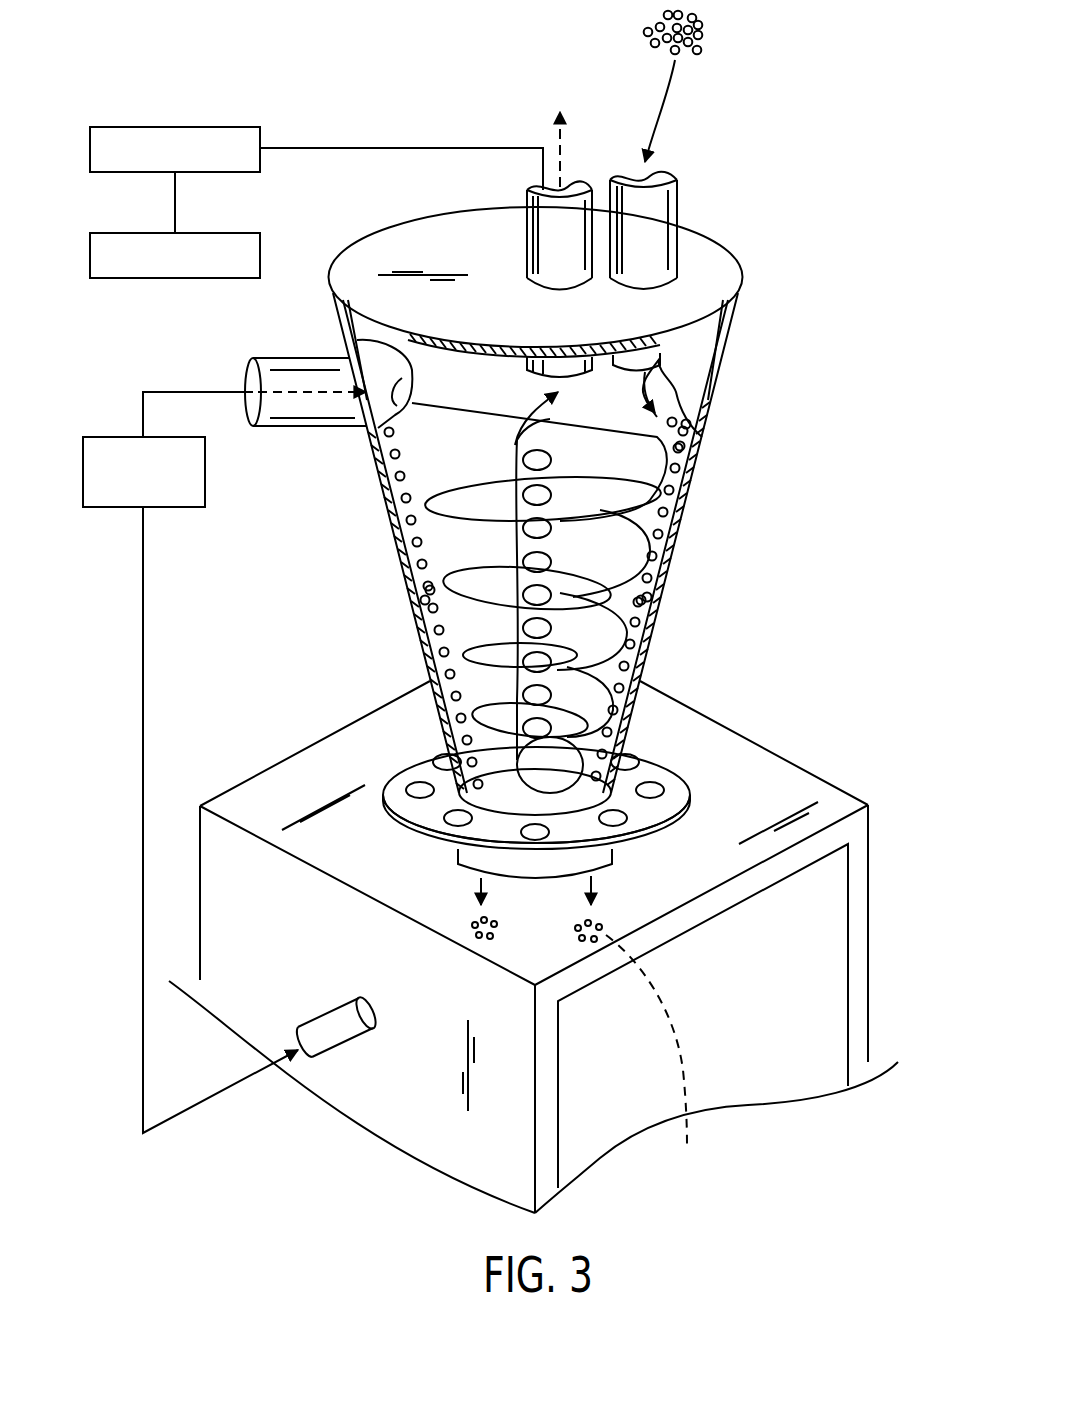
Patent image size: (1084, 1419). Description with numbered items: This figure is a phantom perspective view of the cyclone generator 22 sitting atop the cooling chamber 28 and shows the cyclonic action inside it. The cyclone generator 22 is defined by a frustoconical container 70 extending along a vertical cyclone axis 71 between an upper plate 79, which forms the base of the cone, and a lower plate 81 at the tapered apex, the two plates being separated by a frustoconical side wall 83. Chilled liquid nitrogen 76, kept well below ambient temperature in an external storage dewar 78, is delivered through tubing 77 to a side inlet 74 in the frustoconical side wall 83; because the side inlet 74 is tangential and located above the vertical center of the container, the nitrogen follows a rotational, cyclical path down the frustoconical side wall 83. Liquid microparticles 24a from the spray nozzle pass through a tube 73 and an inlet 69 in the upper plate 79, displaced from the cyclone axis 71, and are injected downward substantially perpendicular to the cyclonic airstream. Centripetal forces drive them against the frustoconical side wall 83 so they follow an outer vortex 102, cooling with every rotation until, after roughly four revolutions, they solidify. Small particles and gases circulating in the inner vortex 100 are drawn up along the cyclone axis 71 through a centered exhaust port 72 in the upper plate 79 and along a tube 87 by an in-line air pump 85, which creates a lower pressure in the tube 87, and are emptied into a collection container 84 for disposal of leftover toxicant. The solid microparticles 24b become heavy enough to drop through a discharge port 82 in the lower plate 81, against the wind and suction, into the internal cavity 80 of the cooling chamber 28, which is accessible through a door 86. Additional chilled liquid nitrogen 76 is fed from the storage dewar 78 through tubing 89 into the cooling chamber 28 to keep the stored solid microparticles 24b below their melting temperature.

The cyclone generator 22 is at (716, 413).
The liquid microparticles 24a is at (712, 33).
The solid microparticles 24b is at (591, 1045).
The cooling chamber 28 is at (864, 921).
The inlet 69 is at (679, 386).
The frustoconical container 70 is at (684, 543).
The cyclone axis 71 is at (562, 147).
The exhaust port 72 is at (547, 377).
The tube 73 is at (677, 200).
The side inlet 74 is at (400, 370).
The chilled liquid nitrogen 76 is at (186, 392).
The tubing 77 is at (280, 417).
The storage dewar 78 is at (83, 470).
The upper plate 79 is at (723, 268).
The internal cavity 80 is at (470, 1170).
The lower plate 81 is at (608, 802).
The discharge port 82 is at (593, 853).
The frustoconical side wall 83 is at (659, 600).
The collection container 84 is at (90, 256).
The in-line air pump 85 is at (90, 150).
The door 86 is at (828, 1003).
The tube 87 is at (540, 203).
The tubing 89 is at (343, 1035).
The inner vortex 100 is at (562, 630).
The outer vortex 102 is at (621, 593).